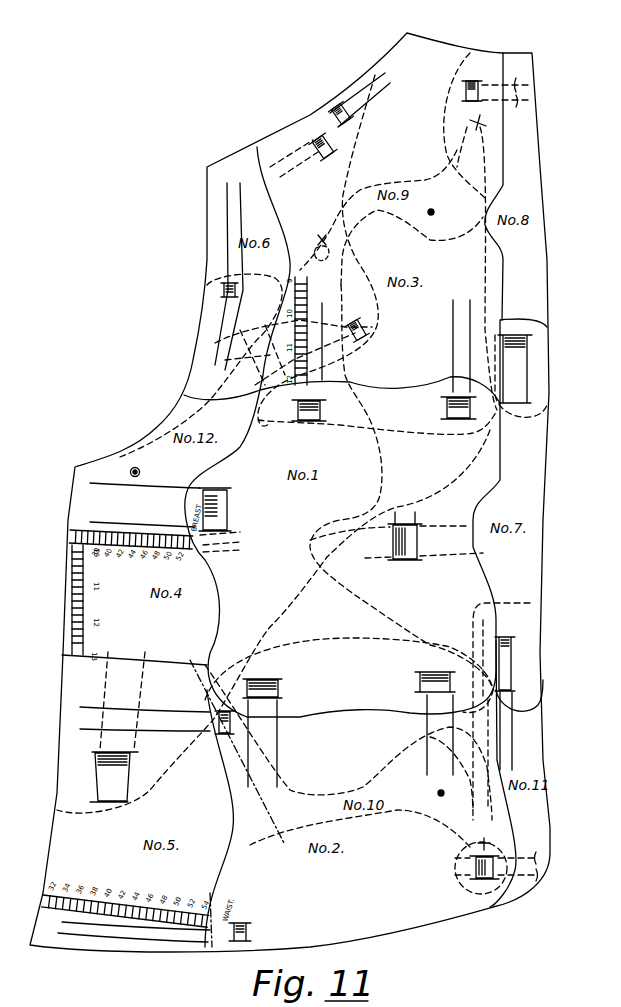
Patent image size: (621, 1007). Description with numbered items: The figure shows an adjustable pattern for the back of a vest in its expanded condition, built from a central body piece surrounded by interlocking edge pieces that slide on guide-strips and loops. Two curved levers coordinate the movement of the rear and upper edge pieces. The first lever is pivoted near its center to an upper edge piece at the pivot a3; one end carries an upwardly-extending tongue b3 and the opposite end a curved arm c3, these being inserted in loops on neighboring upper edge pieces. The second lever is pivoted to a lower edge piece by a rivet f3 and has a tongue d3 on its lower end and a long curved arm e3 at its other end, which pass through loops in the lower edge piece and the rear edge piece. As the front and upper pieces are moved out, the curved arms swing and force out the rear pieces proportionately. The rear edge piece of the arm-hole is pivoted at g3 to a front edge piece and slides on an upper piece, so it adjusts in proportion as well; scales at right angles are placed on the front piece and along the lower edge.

The pivot a3 is at (434, 212).
The upwardly-extending tongue b3 is at (478, 120).
The curved arm c3 is at (336, 222).
The tongue d3 is at (480, 850).
The long curved arm e3 is at (290, 790).
The rivet f3 is at (444, 793).
The pivot g3 is at (133, 470).